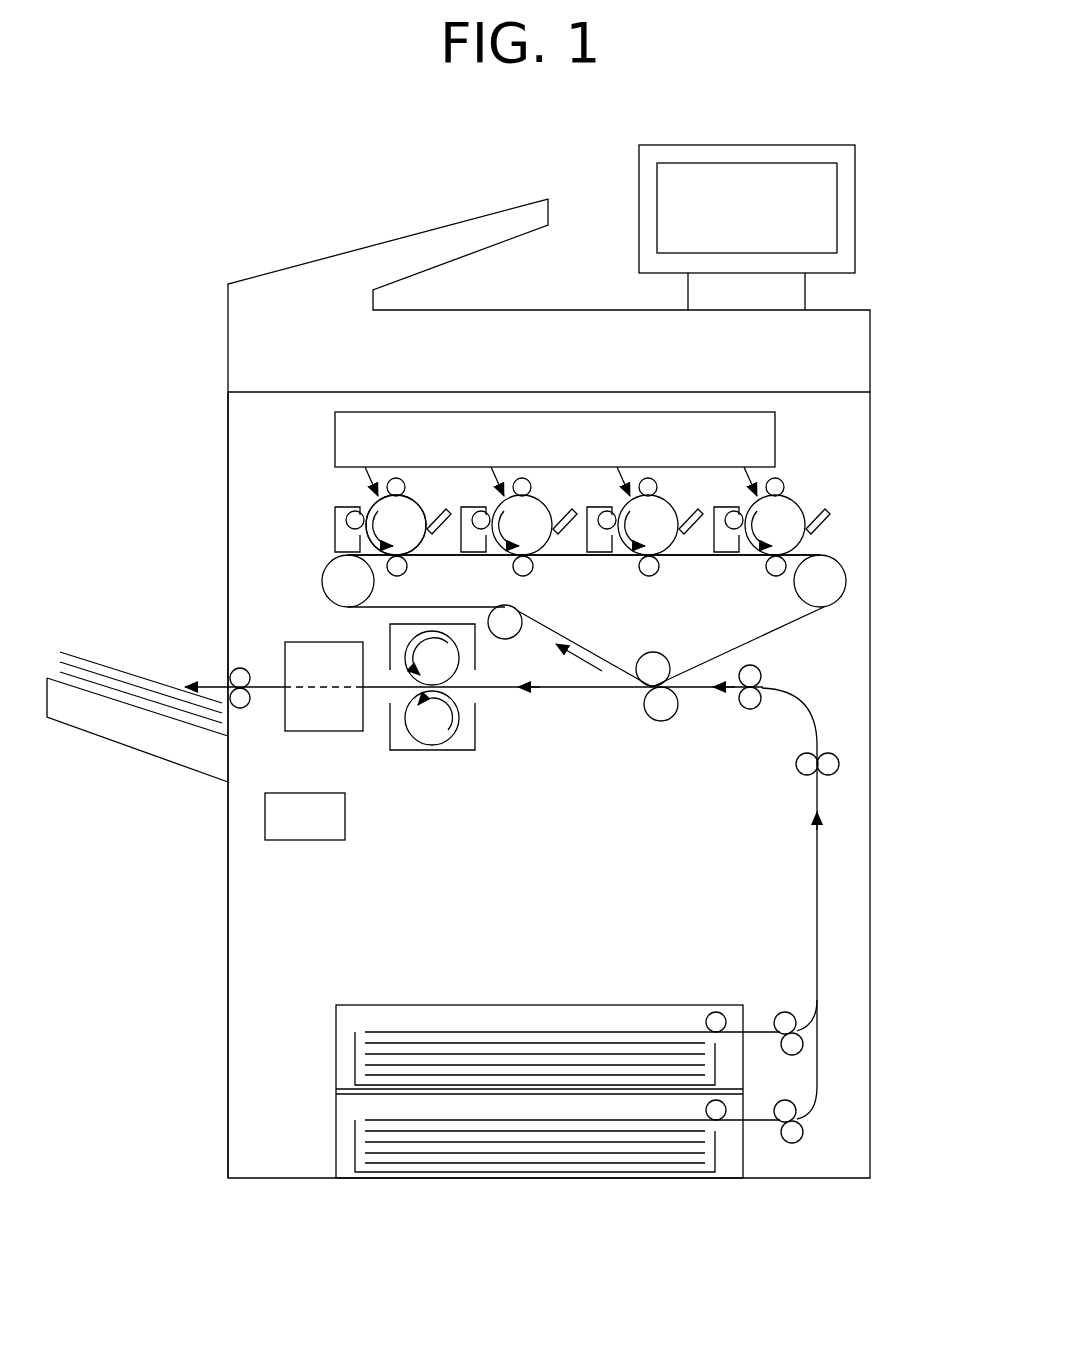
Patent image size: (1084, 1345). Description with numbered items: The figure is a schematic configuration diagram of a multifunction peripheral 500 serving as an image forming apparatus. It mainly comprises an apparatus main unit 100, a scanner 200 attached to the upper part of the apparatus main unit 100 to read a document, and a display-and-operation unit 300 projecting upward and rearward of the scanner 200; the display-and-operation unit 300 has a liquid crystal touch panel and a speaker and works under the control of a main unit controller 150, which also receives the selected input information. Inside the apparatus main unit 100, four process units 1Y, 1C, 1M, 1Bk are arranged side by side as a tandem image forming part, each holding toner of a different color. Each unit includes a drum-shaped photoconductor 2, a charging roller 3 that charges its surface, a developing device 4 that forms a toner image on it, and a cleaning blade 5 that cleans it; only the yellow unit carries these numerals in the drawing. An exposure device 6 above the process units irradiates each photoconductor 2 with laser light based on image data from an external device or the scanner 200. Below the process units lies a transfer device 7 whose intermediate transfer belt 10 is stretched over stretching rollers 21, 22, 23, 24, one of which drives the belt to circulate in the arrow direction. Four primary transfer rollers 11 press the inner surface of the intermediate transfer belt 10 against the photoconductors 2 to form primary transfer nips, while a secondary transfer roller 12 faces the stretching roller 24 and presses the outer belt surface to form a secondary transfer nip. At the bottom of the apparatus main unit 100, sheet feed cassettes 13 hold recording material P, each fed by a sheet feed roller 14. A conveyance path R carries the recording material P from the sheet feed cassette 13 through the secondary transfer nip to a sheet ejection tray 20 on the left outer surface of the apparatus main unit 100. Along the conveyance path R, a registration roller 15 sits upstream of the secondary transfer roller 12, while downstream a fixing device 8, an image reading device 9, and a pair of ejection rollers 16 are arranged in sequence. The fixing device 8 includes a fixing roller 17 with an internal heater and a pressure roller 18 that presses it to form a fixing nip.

The process unit 1Y is at (345, 498).
The process unit 1C is at (496, 498).
The process unit 1M is at (622, 498).
The process unit 1Bk is at (805, 497).
The photoconductor 2 is at (372, 503).
The charging roller 3 is at (395, 477).
The developing device 4 is at (335, 540).
The cleaning blade 5 is at (433, 521).
The exposure device 6 is at (626, 410).
The transfer device 7 is at (312, 574).
The fixing device 8 is at (432, 762).
The image reading device 9 is at (323, 738).
The intermediate transfer belt 10 is at (790, 626).
The primary transfer roller 11 is at (403, 573).
The secondary transfer roller 12 is at (665, 712).
The sheet feed cassette 13 is at (345, 1123).
The sheet feed roller 14 is at (716, 1020).
The registration roller 15 is at (758, 678).
The pair of ejection rollers 16 is at (250, 685).
The fixing roller 17 is at (446, 655).
The pressure roller 18 is at (446, 722).
The sheet ejection tray 20 is at (137, 740).
The stretching roller 21 is at (842, 581).
The stretching roller 22 is at (335, 596).
The stretching roller 23 is at (517, 623).
The stretching roller 24 is at (655, 660).
The apparatus main unit 100 is at (228, 539).
The main unit controller 150 is at (300, 841).
The scanner 200 is at (228, 356).
The display-and-operation unit 300 is at (856, 201).
The multifunction peripheral 500 is at (878, 292).
The recording material P is at (502, 1030).
The conveyance path R is at (560, 690).